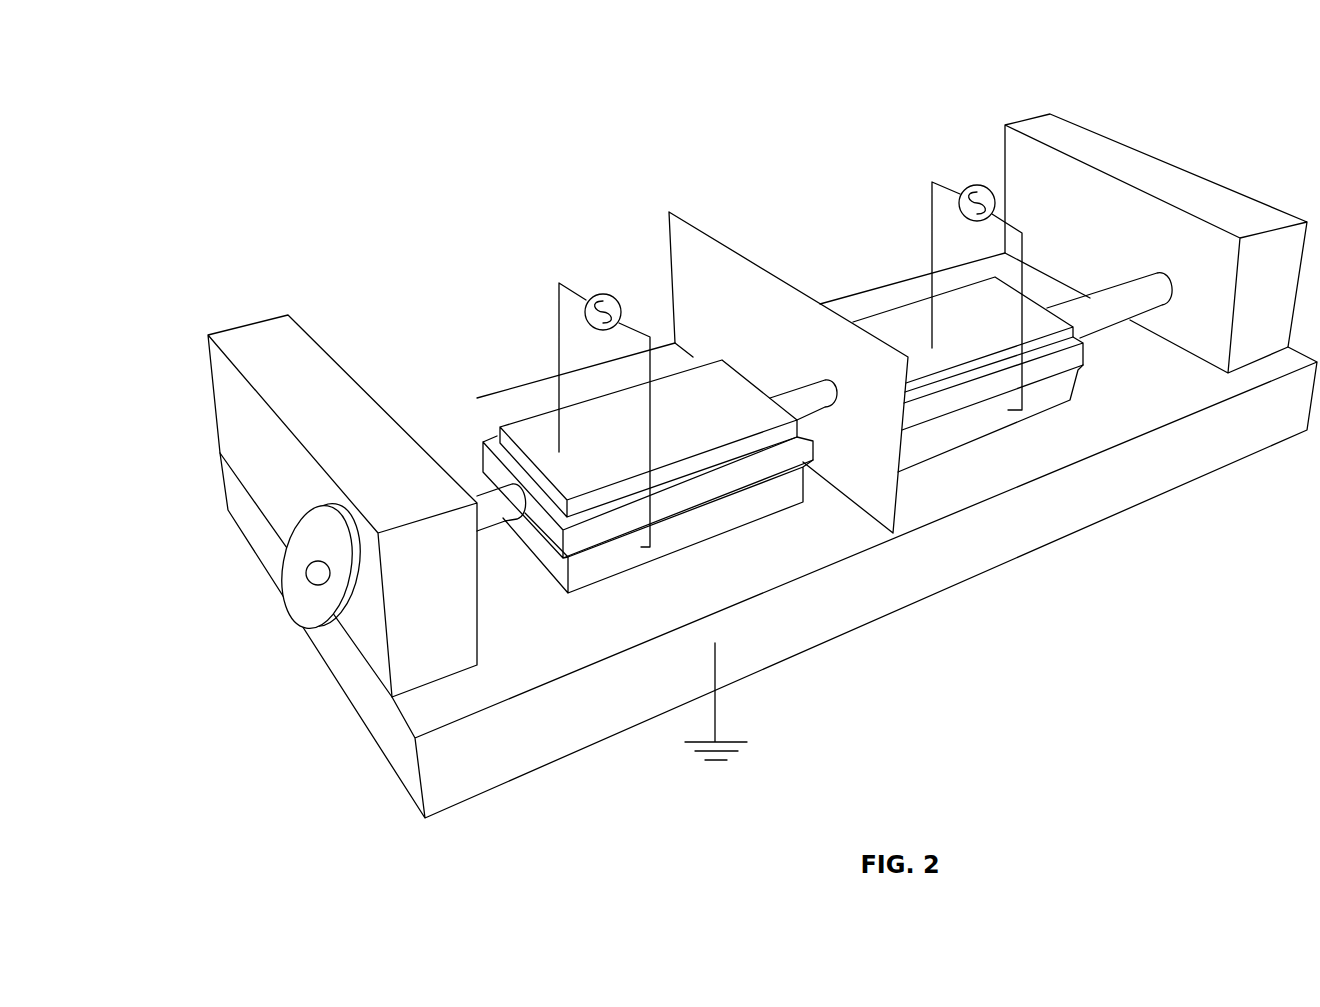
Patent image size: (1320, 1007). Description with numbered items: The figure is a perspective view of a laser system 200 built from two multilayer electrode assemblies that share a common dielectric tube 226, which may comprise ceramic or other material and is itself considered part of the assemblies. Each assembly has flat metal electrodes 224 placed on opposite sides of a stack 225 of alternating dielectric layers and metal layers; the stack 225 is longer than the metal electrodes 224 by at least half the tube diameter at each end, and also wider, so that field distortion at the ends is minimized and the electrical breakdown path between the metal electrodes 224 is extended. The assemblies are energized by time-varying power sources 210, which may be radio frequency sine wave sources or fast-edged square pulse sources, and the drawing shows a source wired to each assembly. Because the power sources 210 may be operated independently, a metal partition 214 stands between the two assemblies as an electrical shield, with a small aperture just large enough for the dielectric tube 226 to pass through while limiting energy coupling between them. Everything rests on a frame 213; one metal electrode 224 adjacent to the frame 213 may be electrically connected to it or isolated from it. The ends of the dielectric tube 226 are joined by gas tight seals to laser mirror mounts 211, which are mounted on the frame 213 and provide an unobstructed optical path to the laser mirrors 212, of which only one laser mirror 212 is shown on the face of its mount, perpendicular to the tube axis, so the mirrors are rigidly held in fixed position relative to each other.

The laser system 200 is at (698, 449).
The power source 210 is at (602, 293).
The laser mirror mount 211 is at (265, 353).
The laser mirror 212 is at (293, 513).
The frame 213 is at (505, 740).
The metal partition 214 is at (767, 318).
The metal electrode 224 is at (775, 502).
The stack 225 is at (588, 533).
The dielectric tube 226 is at (490, 510).